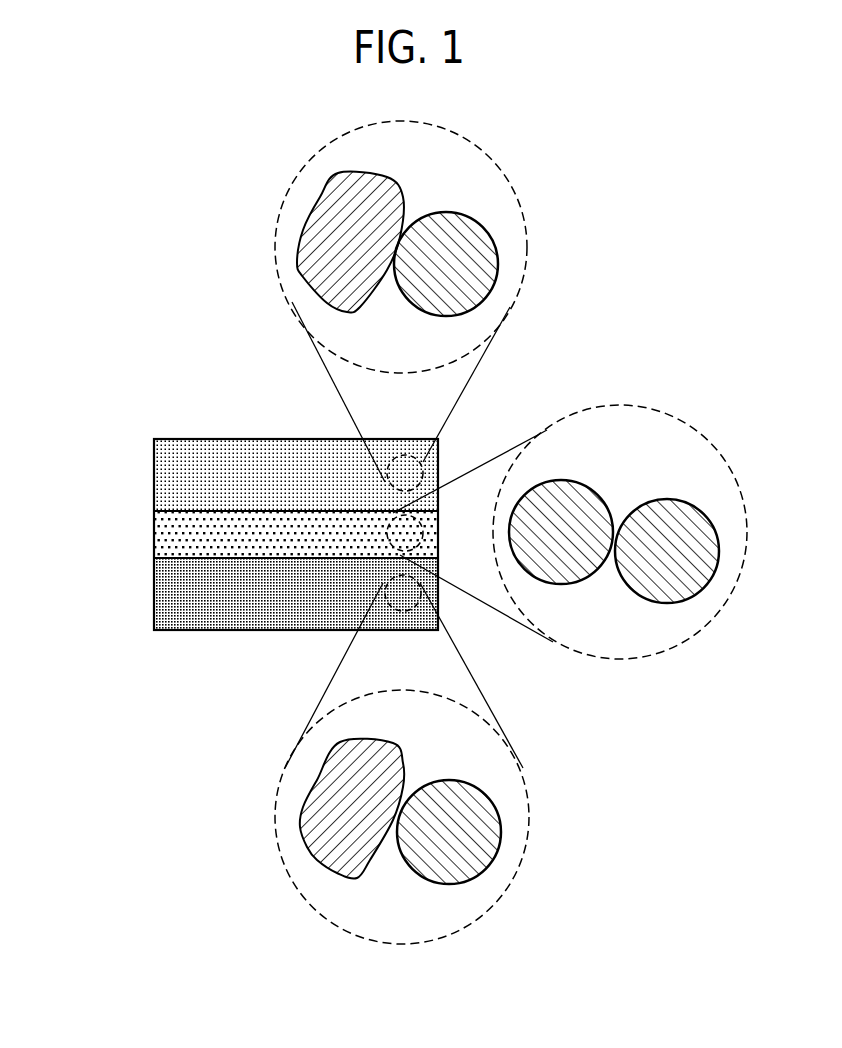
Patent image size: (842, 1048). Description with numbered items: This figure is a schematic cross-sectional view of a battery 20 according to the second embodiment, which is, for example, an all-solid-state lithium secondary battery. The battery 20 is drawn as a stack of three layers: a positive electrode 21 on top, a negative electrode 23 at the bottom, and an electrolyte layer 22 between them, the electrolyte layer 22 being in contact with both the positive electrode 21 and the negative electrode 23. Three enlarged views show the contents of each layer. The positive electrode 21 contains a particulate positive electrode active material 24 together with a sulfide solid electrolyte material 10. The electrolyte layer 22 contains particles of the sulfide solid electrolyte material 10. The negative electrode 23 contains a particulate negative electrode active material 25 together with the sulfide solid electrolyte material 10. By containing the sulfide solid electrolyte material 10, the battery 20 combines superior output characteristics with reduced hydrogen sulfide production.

The sulfide solid electrolyte material 10 is at (477, 258).
The battery 20 is at (255, 471).
The positive electrode 21 is at (193, 467).
The electrolyte layer 22 is at (193, 537).
The negative electrode 23 is at (195, 598).
The positive electrode active material 24 is at (328, 212).
The negative electrode active material 25 is at (333, 837).